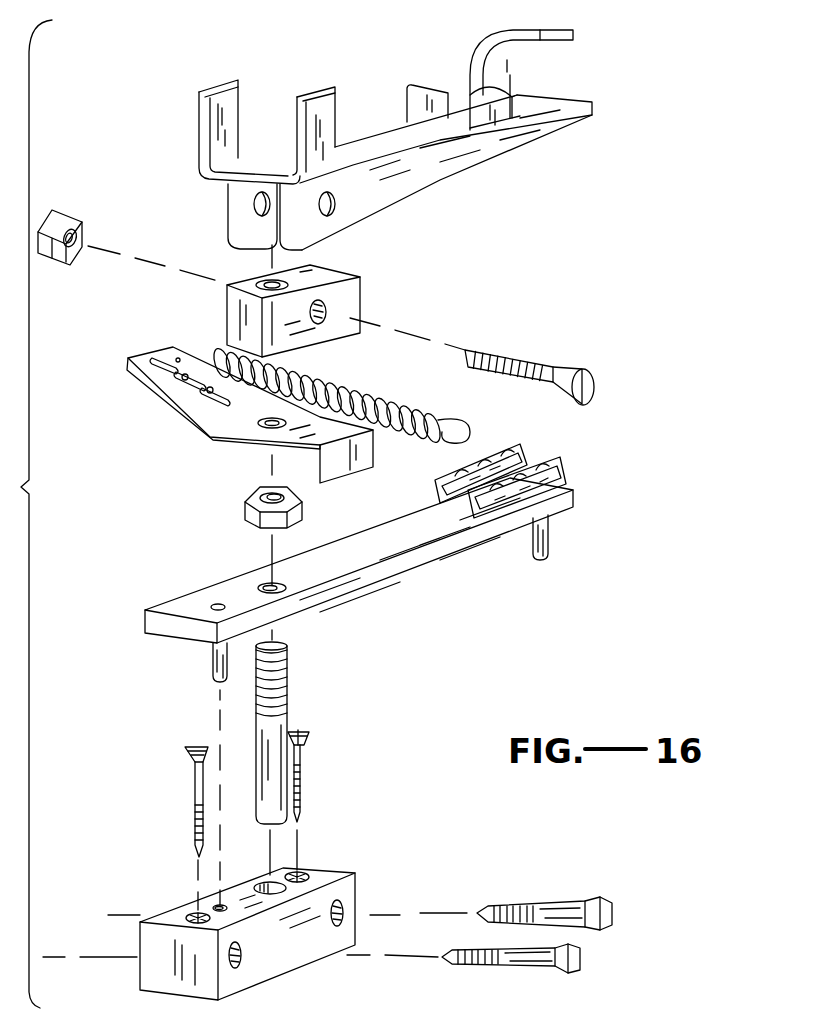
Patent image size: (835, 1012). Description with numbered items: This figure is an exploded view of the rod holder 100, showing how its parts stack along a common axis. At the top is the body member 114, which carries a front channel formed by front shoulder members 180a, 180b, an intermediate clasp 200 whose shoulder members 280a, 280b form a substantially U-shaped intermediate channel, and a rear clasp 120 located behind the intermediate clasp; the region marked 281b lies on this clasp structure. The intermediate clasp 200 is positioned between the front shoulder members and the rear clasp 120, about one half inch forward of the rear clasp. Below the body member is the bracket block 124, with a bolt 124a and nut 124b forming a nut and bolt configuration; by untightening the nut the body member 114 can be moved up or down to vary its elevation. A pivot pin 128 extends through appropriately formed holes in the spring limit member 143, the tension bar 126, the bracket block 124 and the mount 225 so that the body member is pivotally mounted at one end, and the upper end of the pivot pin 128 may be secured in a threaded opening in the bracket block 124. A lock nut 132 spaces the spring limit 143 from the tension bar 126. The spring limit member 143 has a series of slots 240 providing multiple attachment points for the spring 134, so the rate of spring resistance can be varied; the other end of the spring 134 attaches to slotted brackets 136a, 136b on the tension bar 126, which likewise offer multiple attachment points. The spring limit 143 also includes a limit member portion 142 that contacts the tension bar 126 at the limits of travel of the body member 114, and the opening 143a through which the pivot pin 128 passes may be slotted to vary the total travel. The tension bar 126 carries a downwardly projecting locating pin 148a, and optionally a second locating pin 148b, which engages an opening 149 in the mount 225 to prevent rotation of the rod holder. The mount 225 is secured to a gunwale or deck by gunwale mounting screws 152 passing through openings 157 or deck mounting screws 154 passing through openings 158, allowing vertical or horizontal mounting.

The rod holder 100 is at (645, 66).
The body member 114 is at (420, 172).
The rear clasp 120 is at (562, 33).
The bracket block 124 is at (357, 293).
The bolt 124a is at (548, 368).
The nut 124b is at (63, 217).
The tension bar 126 is at (387, 577).
The pivot pin 128 is at (282, 720).
The lock nut 132 is at (245, 508).
The spring 134 is at (447, 410).
The slotted bracket 136a is at (567, 483).
The slotted bracket 136b is at (500, 450).
The limit member portion 142 is at (337, 467).
The spring limit member 143 is at (130, 377).
The opening 143a is at (257, 430).
The locating pin 148a is at (213, 663).
The locating pin 148b is at (548, 535).
The opening 149 is at (218, 908).
The gunwale mounting screws 152 is at (572, 907).
The deck mounting screws 154 is at (190, 777).
The openings 157 is at (343, 911).
The openings 158 is at (190, 918).
The front shoulder member 180a is at (199, 118).
The front shoulder member 180b is at (325, 150).
The intermediate clasp 200 is at (430, 72).
The mount 225 is at (355, 873).
The slots 240 is at (173, 380).
The shoulder member 280a is at (410, 103).
The shoulder member 280b is at (408, 100).
The plate portion 281b is at (507, 110).